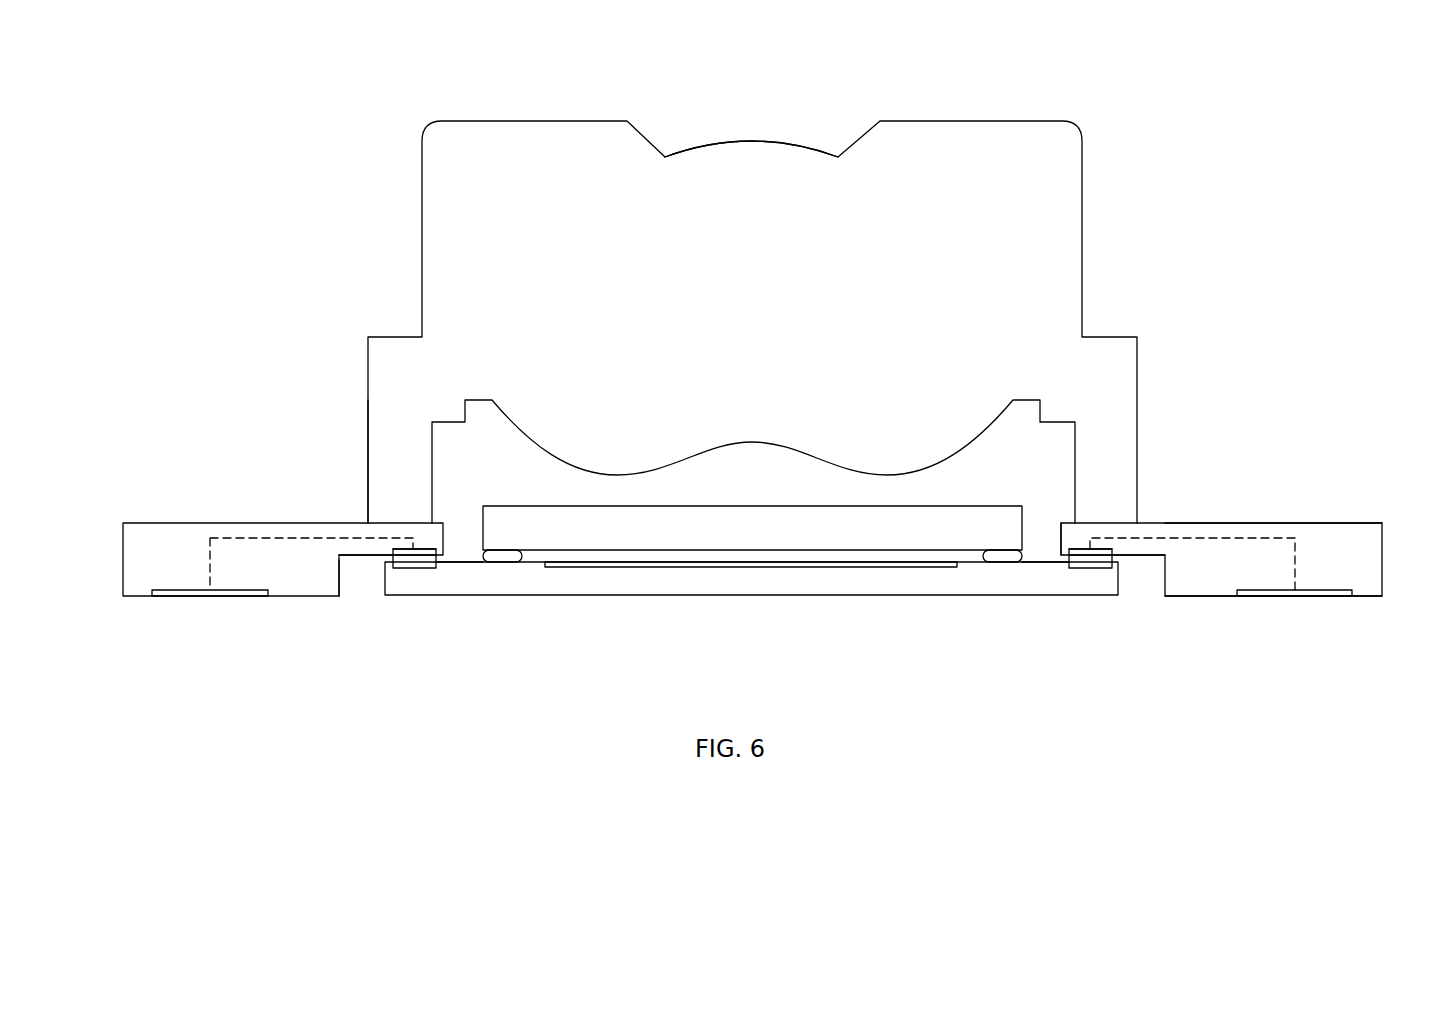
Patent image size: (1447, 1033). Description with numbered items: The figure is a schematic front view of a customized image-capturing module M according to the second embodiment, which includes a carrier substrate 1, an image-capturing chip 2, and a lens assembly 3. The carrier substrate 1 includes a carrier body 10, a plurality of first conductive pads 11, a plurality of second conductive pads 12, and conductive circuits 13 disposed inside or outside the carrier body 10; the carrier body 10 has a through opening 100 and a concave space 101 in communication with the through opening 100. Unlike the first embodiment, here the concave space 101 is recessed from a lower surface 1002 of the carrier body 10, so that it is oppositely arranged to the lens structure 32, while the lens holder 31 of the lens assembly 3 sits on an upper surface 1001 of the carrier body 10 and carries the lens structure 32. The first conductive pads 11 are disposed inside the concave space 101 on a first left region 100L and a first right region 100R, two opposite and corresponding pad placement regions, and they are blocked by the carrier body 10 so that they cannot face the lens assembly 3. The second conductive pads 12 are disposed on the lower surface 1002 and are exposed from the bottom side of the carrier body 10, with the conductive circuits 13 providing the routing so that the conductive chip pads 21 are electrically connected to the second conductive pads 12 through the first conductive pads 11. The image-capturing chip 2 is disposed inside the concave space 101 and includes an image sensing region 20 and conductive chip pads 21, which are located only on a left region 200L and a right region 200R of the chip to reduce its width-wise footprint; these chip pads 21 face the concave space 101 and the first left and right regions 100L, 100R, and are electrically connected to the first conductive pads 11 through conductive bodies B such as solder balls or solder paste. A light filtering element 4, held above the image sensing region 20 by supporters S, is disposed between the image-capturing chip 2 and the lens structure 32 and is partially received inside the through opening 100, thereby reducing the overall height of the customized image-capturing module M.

The customized image-capturing module M is at (152, 68).
The carrier substrate 1 is at (128, 565).
The carrier body 10 is at (1365, 564).
The through opening 100 is at (1050, 533).
The upper surface 1001 is at (1353, 520).
The lower surface 1002 is at (1195, 600).
The first left region 100L is at (357, 560).
The first right region 100R is at (1143, 560).
The concave space 101 is at (372, 582).
The first conductive pads 11 is at (420, 548).
The second conductive pads 12 is at (165, 598).
The conductive circuits 13 is at (207, 557).
The image-capturing chip 2 is at (846, 592).
The image sensing region 20 is at (735, 567).
The left region 200L is at (465, 558).
The right region 200R is at (1035, 558).
The conductive chip pads 21 is at (423, 568).
The conductive bodies B is at (410, 566).
The lens assembly 3 is at (428, 262).
The lens holder 31 is at (386, 383).
The lens structure 32 is at (748, 160).
The light filtering element 4 is at (623, 510).
The supporters S is at (506, 550).